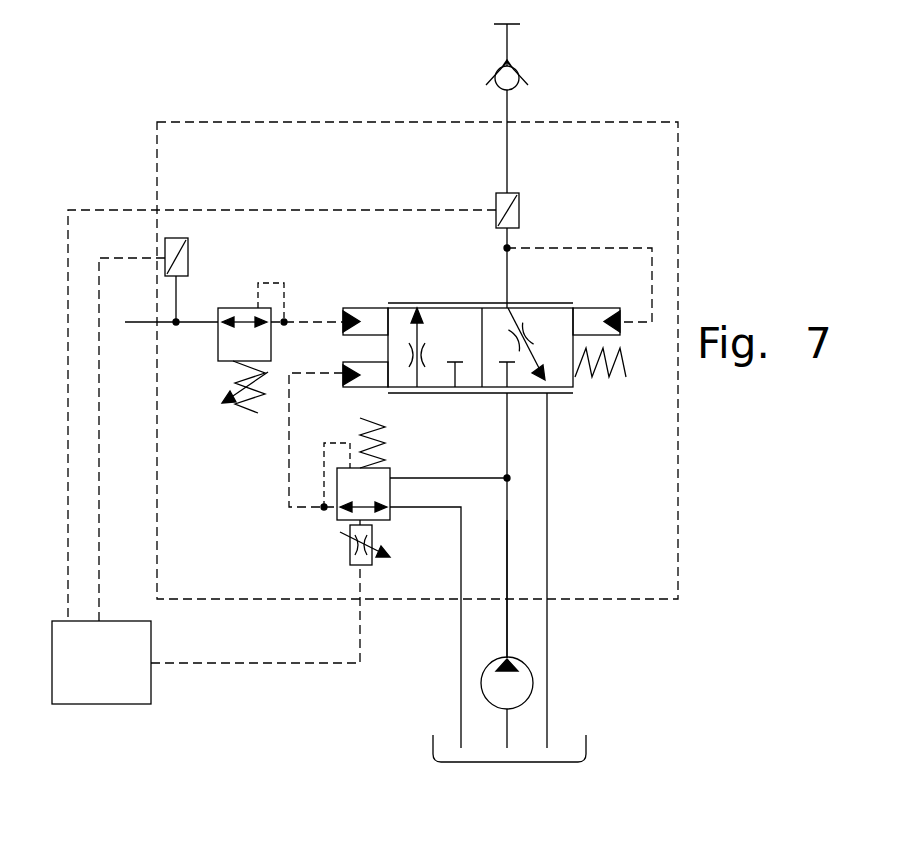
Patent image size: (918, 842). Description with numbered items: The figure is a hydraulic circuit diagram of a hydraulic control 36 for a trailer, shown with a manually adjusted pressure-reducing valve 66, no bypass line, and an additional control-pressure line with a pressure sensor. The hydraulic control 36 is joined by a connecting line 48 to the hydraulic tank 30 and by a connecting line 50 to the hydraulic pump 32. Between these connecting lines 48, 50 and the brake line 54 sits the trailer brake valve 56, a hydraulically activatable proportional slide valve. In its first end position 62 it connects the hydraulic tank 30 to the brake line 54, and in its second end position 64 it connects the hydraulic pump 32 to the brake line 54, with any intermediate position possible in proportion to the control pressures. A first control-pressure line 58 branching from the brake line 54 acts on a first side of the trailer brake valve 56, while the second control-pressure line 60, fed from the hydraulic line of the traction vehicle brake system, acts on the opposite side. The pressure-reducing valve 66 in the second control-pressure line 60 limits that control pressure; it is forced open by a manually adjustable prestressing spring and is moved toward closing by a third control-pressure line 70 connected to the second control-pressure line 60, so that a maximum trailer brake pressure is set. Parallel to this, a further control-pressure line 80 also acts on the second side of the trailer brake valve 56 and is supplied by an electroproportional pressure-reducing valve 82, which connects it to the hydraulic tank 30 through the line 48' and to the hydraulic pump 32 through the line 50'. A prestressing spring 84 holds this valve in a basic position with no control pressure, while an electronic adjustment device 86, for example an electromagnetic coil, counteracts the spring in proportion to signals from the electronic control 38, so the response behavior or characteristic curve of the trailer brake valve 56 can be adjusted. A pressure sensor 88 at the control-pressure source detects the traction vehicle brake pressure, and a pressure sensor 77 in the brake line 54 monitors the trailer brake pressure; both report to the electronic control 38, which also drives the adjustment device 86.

The hydraulic tank 30 is at (586, 750).
The hydraulic pump 32 is at (532, 672).
The hydraulic control 36 is at (677, 215).
The electronic control 38 is at (274, 457).
The connecting line 48 is at (592, 570).
The line 48' is at (425, 627).
The connecting line 50 is at (566, 580).
The line 50' is at (450, 519).
The brake line 54 is at (508, 102).
The trailer brake valve 56 is at (473, 330).
The first control-pressure line 58 is at (622, 248).
The second control-pressure line 60 is at (322, 322).
The first end position 62 is at (560, 370).
The second end position 64 is at (438, 373).
The pressure-reducing valve 66 is at (232, 308).
The third control-pressure line 70 is at (270, 283).
The pressure sensor 77 is at (520, 203).
The further control-pressure line 80 is at (288, 450).
The electroproportional pressure-reducing valve 82 is at (390, 497).
The prestressing spring 84 is at (383, 433).
The electronic adjustment device 86 is at (352, 560).
The pressure sensor 88 is at (176, 238).